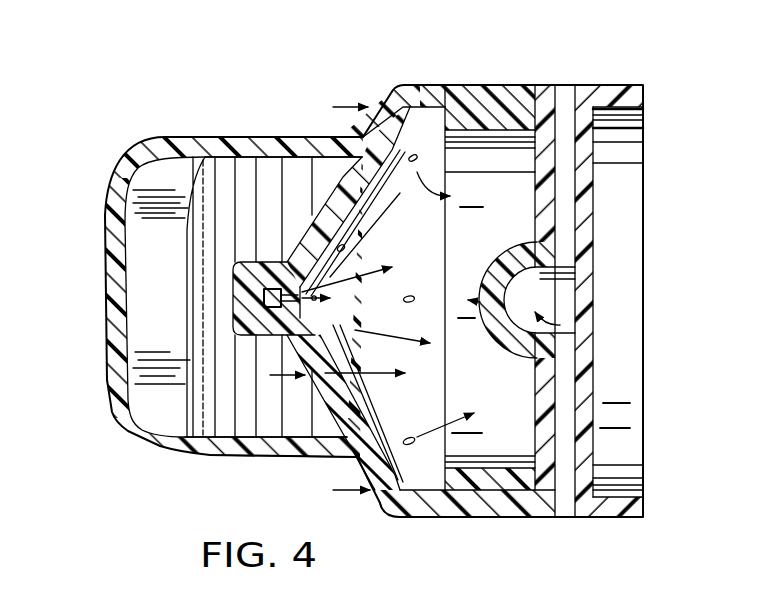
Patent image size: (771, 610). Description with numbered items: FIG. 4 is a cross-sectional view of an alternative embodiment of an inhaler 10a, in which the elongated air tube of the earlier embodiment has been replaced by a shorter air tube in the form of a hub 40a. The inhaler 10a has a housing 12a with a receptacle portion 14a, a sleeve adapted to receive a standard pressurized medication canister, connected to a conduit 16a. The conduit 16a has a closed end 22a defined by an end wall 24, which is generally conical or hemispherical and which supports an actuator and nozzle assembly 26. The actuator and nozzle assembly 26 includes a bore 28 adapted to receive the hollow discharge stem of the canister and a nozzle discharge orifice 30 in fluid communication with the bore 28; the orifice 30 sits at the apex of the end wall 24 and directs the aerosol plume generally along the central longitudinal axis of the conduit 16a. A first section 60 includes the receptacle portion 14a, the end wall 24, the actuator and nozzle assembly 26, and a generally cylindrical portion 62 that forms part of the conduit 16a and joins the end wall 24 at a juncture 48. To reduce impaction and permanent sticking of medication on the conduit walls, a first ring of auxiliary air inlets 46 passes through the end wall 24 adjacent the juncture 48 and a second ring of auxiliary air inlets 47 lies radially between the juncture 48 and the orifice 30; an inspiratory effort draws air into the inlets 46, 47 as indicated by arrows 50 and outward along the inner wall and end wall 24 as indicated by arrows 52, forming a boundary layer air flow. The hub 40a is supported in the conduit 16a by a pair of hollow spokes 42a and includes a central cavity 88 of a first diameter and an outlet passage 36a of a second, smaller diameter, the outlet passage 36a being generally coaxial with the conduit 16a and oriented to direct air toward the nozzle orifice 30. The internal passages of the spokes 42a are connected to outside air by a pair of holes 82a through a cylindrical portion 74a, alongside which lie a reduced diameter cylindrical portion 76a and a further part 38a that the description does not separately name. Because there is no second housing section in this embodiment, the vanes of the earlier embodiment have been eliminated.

The inhaler 10a is at (207, 492).
The housing 12a is at (113, 420).
The receptacle portion 14a is at (218, 137).
The conduit 16a is at (527, 82).
The closed end 22a is at (322, 398).
The end wall 24 is at (325, 358).
The actuator and nozzle assembly 26 is at (245, 317).
The bore 28 is at (263, 298).
The nozzle discharge orifice 30 is at (318, 250).
The outlet passage 36a is at (480, 302).
The inner wall 38a is at (577, 80).
The hub 40a is at (518, 232).
The hollow spokes 42a is at (587, 178).
The auxiliary air inlets 46 is at (418, 150).
The auxiliary air inlets 47 is at (346, 248).
The juncture 48 is at (400, 502).
The arrows 50 is at (362, 104).
The arrows 52 is at (417, 172).
The first section 60 is at (160, 448).
The generally cylindrical portion 62 is at (478, 85).
The cylindrical portion 74a is at (627, 85).
The reduced diameter cylindrical portion 76a is at (485, 497).
The holes 82a is at (565, 82).
The bulb chamber 88 is at (520, 356).